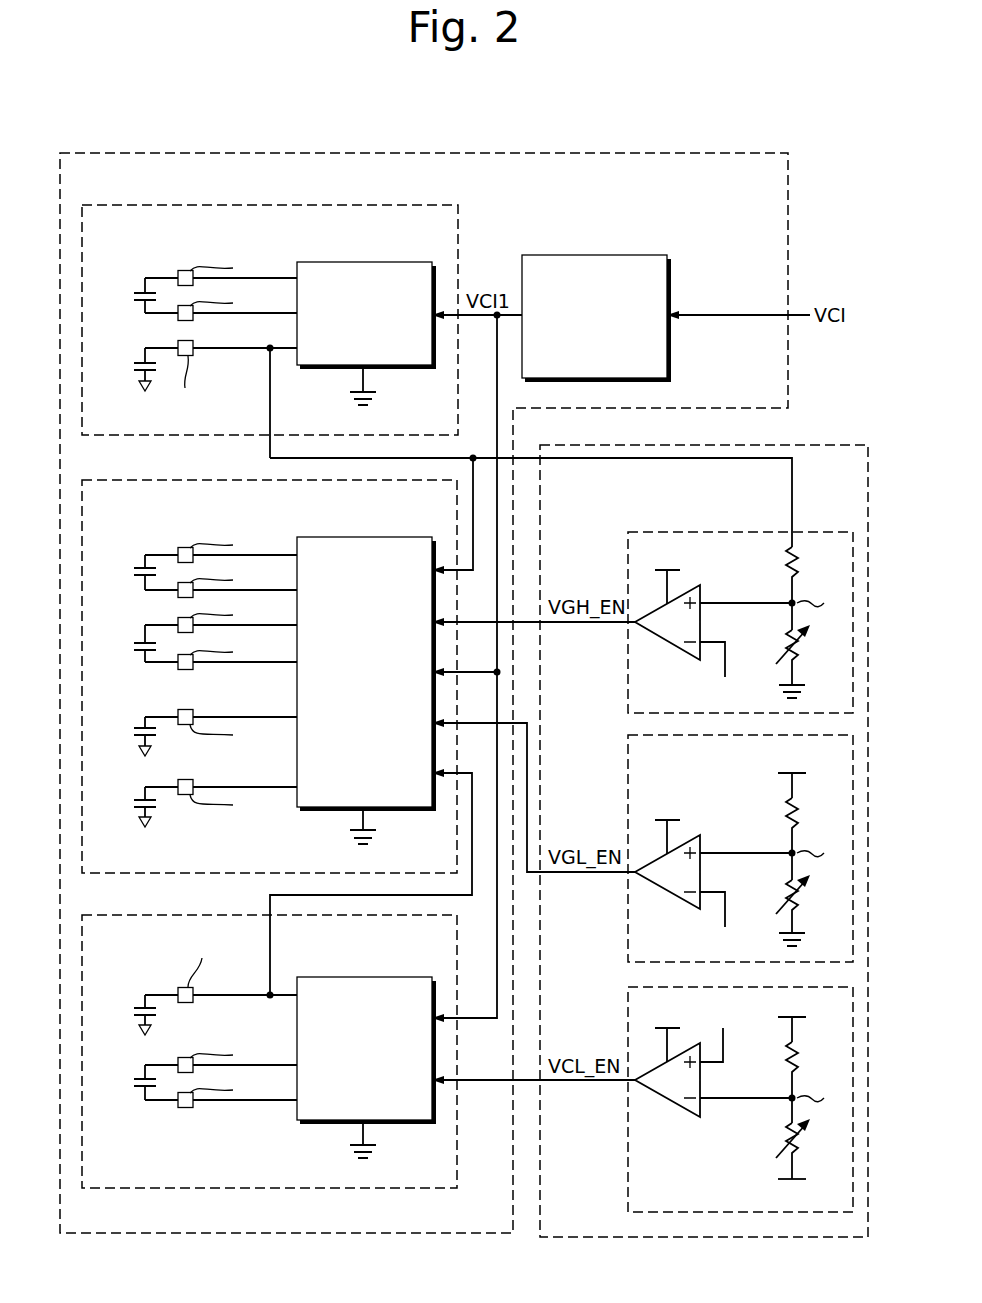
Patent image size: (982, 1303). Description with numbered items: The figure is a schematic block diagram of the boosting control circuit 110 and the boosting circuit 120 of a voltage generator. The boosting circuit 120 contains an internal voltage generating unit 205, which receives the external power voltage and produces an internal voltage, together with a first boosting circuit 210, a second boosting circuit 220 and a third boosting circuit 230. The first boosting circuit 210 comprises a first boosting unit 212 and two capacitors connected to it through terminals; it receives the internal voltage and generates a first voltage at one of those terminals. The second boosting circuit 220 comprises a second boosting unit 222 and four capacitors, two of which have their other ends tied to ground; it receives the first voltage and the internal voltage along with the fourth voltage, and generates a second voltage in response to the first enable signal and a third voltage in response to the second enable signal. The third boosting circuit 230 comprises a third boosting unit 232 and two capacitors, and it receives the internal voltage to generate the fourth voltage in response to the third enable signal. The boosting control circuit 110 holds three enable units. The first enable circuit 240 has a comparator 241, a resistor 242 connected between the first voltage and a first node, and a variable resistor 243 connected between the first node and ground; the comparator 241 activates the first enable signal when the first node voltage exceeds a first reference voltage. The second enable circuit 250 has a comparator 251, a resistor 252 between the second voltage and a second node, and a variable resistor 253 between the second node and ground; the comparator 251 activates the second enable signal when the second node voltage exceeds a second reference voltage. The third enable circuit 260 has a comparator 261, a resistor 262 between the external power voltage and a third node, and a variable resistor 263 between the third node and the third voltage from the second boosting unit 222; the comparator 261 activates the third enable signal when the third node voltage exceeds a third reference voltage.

The boosting control circuit 110 is at (812, 445).
The boosting circuit 120 is at (722, 153).
The internal voltage generating unit 205 is at (605, 255).
The first boosting circuit 210 is at (130, 205).
The first boosting unit 212 is at (375, 262).
The second boosting circuit 220 is at (130, 480).
The second boosting unit 222 is at (375, 537).
The third boosting circuit 230 is at (130, 915).
The third boosting unit 232 is at (375, 977).
The first enable circuit 240 is at (628, 680).
The comparator 241 is at (702, 592).
The resistor 242 is at (813, 588).
The variable resistor 243 is at (810, 661).
The second enable circuit 250 is at (628, 928).
The comparator 251 is at (702, 842).
The resistor 252 is at (813, 839).
The variable resistor 253 is at (810, 910).
The third enable circuit 260 is at (628, 1178).
The comparator 261 is at (700, 1108).
The resistor 262 is at (813, 1082).
The variable resistor 263 is at (808, 1161).